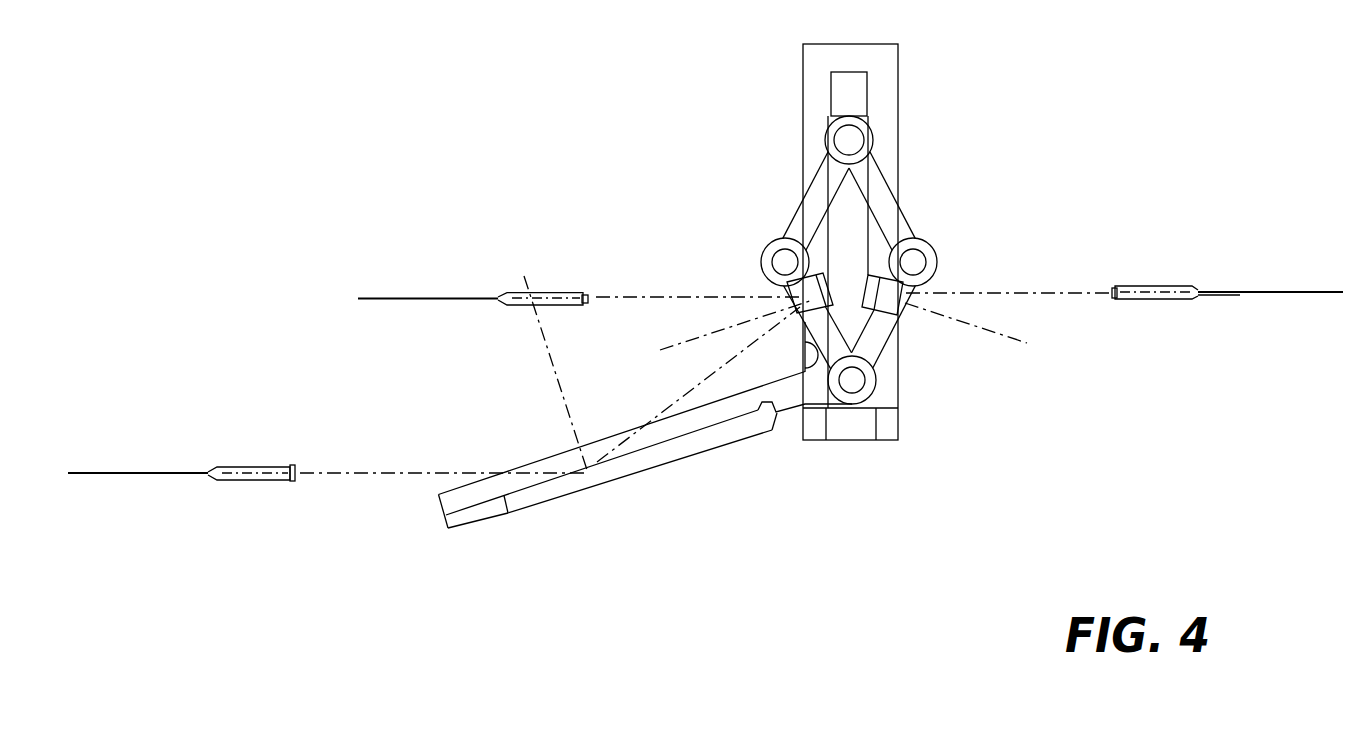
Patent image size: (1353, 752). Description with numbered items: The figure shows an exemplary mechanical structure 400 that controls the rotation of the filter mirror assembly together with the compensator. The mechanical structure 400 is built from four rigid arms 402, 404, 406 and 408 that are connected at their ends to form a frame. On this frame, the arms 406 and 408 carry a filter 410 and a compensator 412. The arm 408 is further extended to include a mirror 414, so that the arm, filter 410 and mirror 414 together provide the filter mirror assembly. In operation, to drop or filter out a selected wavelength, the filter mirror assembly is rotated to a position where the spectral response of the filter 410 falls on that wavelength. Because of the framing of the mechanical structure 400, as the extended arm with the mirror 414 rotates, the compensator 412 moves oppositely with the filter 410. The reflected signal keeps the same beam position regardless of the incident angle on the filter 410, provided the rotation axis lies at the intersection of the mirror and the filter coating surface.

The mechanical structure 400 is at (884, 67).
The rigid arm 402 is at (806, 208).
The rigid arm 404 is at (892, 203).
The rigid arm 406 is at (877, 347).
The rigid arm 408 is at (795, 402).
The filter 410 is at (818, 304).
The compensator 412 is at (903, 292).
The mirror 414 is at (587, 487).